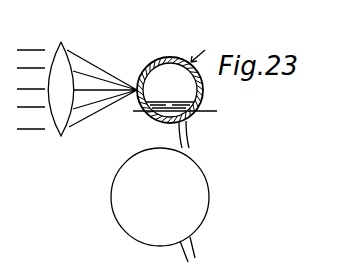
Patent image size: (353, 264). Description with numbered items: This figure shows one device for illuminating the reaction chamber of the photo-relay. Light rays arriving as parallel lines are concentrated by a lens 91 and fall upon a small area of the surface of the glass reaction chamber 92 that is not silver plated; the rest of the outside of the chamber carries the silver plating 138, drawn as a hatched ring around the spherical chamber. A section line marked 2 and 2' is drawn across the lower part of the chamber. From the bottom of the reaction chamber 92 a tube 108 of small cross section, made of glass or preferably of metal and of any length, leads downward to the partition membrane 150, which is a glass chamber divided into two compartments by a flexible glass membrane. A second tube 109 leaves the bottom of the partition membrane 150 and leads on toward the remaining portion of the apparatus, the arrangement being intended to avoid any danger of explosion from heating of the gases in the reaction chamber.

The lens 91 is at (77, 80).
The glass reaction chamber 92 is at (170, 90).
The silver plating 138 is at (205, 48).
The section line 2 is at (146, 120).
The section line 2' is at (197, 120).
The tube 108 is at (190, 144).
The partition membrane 150 is at (160, 197).
The tube 109 is at (190, 257).